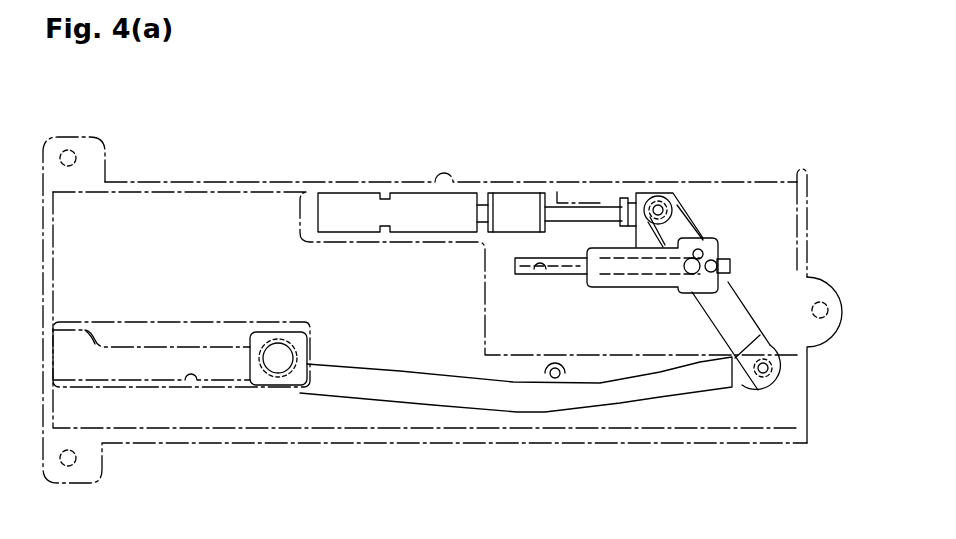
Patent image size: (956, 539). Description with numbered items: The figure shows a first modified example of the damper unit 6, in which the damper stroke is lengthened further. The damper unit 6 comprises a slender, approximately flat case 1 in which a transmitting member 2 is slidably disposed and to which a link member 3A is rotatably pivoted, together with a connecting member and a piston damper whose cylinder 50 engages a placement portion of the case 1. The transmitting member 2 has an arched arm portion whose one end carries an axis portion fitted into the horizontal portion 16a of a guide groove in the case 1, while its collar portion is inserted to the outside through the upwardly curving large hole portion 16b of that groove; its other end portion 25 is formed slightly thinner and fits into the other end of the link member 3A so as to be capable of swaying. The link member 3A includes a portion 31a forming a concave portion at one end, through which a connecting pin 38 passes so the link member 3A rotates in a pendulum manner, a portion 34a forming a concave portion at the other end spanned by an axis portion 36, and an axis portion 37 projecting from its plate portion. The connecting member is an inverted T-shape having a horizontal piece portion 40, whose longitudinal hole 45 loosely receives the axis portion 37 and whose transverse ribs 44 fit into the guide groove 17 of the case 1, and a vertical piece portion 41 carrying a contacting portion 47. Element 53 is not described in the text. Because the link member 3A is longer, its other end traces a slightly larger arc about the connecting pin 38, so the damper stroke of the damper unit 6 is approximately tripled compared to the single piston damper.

The case 1 is at (273, 176).
The damper unit 6 is at (230, 176).
The horizontal portion 16a is at (190, 385).
The large hole portion 16b is at (95, 330).
The transmitting member 2 is at (436, 412).
The cylinder 50 is at (402, 207).
The plunger 53 is at (573, 205).
The contacting portion 47 is at (618, 205).
The vertical piece portion 41 is at (633, 207).
The connecting pin 38 is at (668, 203).
The portion forming a concave portion 31a is at (680, 240).
The longitudinal hole 45 is at (706, 243).
The axis portion 37 is at (712, 252).
The horizontal piece portion 40 is at (726, 254).
The link member 3A is at (741, 292).
The axis portion 36 is at (790, 392).
The portion forming a concave portion 34a is at (757, 388).
The other end portion 25 is at (742, 388).
The guide groove 17 is at (548, 272).
The transverse ribs 44 is at (620, 282).